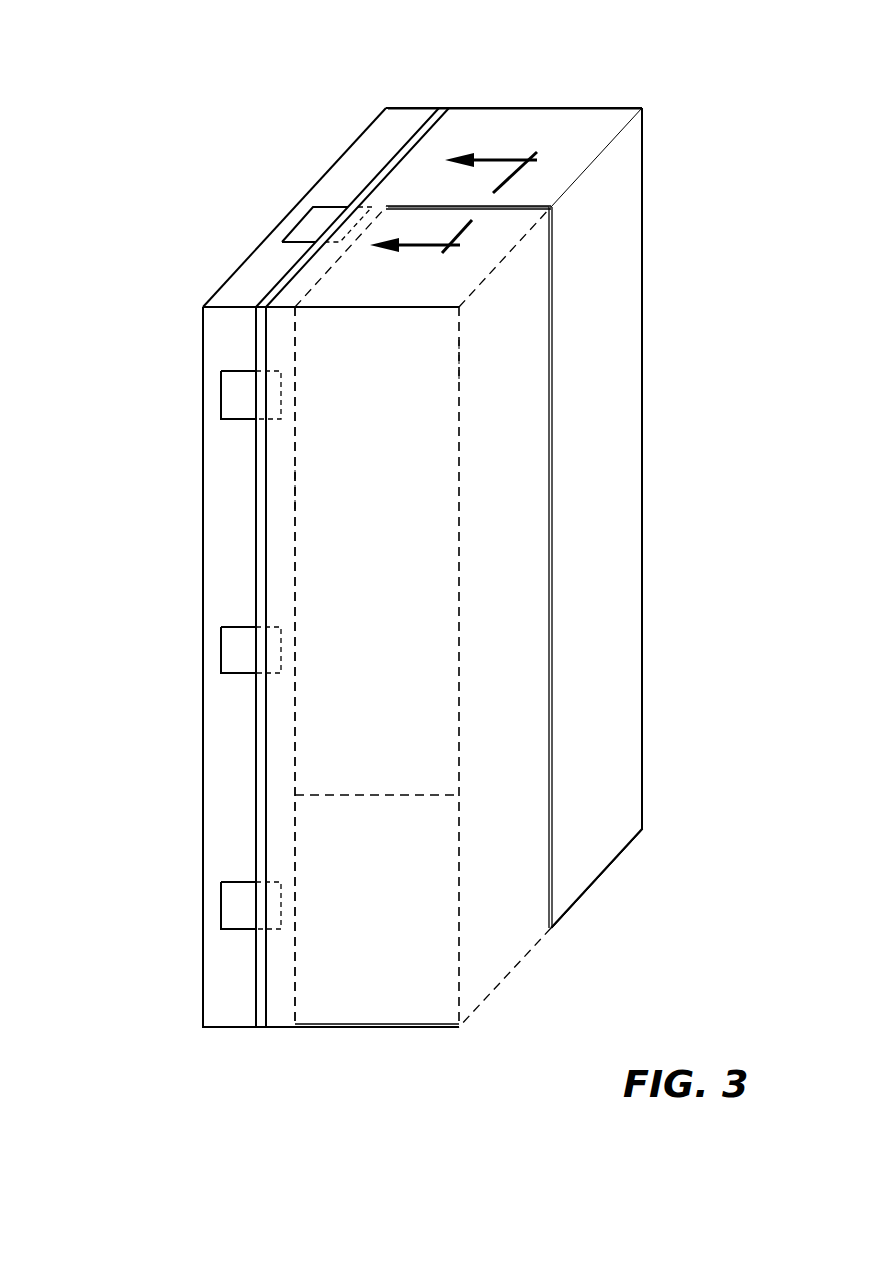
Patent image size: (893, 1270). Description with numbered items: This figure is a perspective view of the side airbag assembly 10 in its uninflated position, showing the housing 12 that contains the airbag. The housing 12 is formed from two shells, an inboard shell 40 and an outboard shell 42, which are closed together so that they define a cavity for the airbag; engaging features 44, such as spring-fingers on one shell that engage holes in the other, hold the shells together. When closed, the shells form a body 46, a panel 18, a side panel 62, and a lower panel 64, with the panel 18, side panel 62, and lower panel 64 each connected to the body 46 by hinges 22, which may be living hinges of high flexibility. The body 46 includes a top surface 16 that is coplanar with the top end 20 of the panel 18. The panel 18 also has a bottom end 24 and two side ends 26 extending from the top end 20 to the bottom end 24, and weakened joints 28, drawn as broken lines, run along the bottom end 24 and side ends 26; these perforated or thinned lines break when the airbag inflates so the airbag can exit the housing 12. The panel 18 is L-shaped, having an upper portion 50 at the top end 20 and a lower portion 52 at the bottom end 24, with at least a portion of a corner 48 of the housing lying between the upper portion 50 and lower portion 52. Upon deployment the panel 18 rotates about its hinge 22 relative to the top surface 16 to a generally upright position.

The side airbag assembly 10 is at (98, 236).
The housing 12 is at (598, 100).
The top surface 16 is at (497, 127).
The panel 18 is at (326, 697).
The top end 20 is at (437, 211).
The hinge 22 is at (537, 205).
The bottom end 24 is at (358, 795).
The side ends 26 is at (459, 353).
The weakened joints 28 is at (297, 547).
The inboard shell 40 is at (254, 250).
The outboard shell 42 is at (627, 108).
The engaging features 44 is at (312, 222).
The body 46 is at (539, 120).
The corner 48 is at (391, 305).
The upper portion 50 is at (435, 287).
The lower portion 52 is at (395, 487).
The side panel 62 is at (503, 940).
The lower panel 64 is at (418, 990).